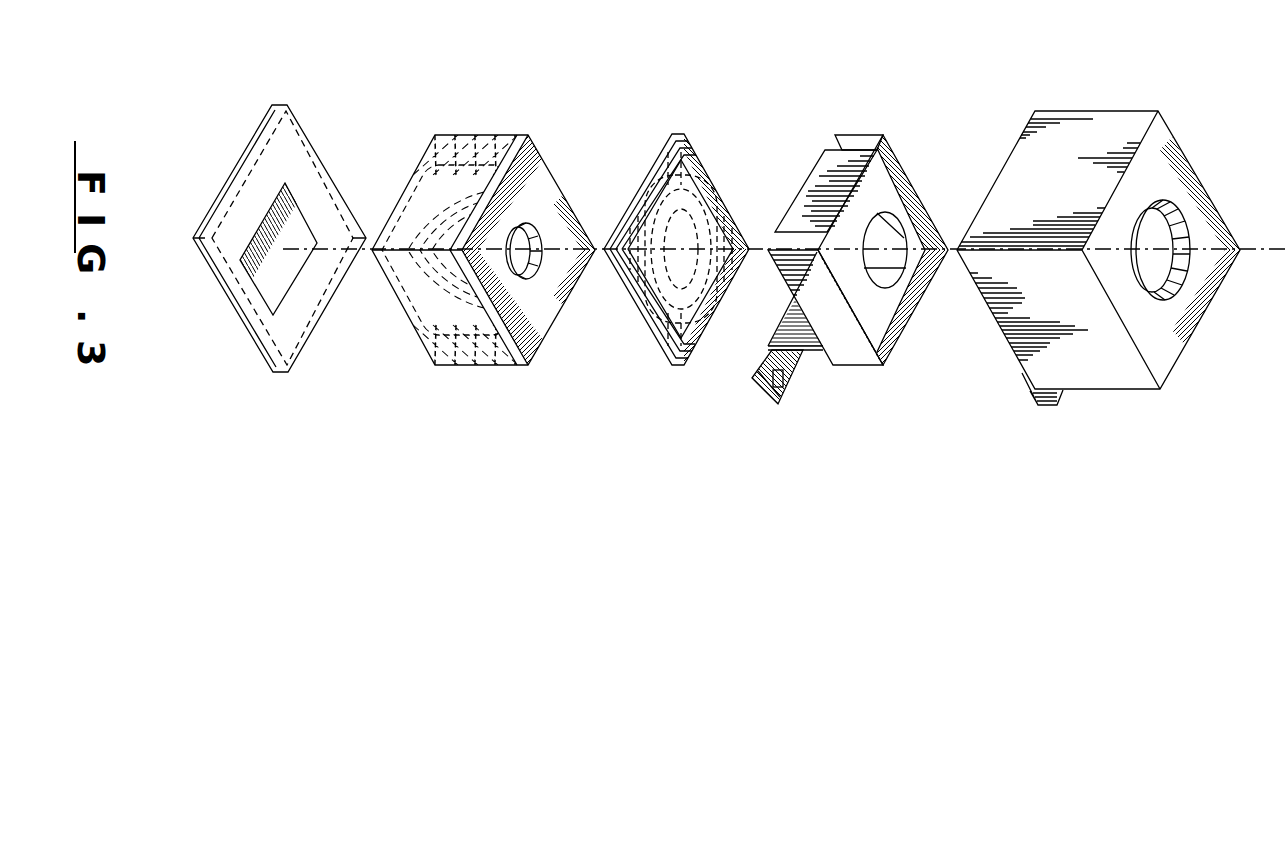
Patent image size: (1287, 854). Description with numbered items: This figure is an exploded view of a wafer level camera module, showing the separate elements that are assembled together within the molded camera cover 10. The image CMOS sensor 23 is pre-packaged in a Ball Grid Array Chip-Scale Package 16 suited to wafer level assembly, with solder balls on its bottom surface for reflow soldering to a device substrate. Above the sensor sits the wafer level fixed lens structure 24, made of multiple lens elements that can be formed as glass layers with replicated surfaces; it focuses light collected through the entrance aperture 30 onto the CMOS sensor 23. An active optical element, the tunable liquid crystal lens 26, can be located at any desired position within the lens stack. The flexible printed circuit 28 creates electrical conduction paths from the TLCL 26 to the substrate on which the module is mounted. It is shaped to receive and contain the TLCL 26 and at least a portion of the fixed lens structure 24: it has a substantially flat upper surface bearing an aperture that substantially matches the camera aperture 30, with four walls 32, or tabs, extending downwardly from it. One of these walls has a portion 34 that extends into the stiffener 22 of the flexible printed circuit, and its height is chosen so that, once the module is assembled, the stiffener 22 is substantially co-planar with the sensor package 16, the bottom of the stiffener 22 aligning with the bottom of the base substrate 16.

The molded camera cover 10 is at (1105, 373).
The Ball Grid Array Chip-Scale Package 16 is at (282, 378).
The stiffener 22 is at (772, 405).
The image CMOS sensor 23 is at (280, 277).
The wafer level fixed lens structure 24 is at (464, 370).
The tunable liquid crystal lens 26 is at (660, 352).
The flexible printed circuit 28 is at (905, 318).
The entrance aperture 30 is at (1157, 265).
The walls 32 is at (833, 162).
The wall portion 34 is at (796, 351).